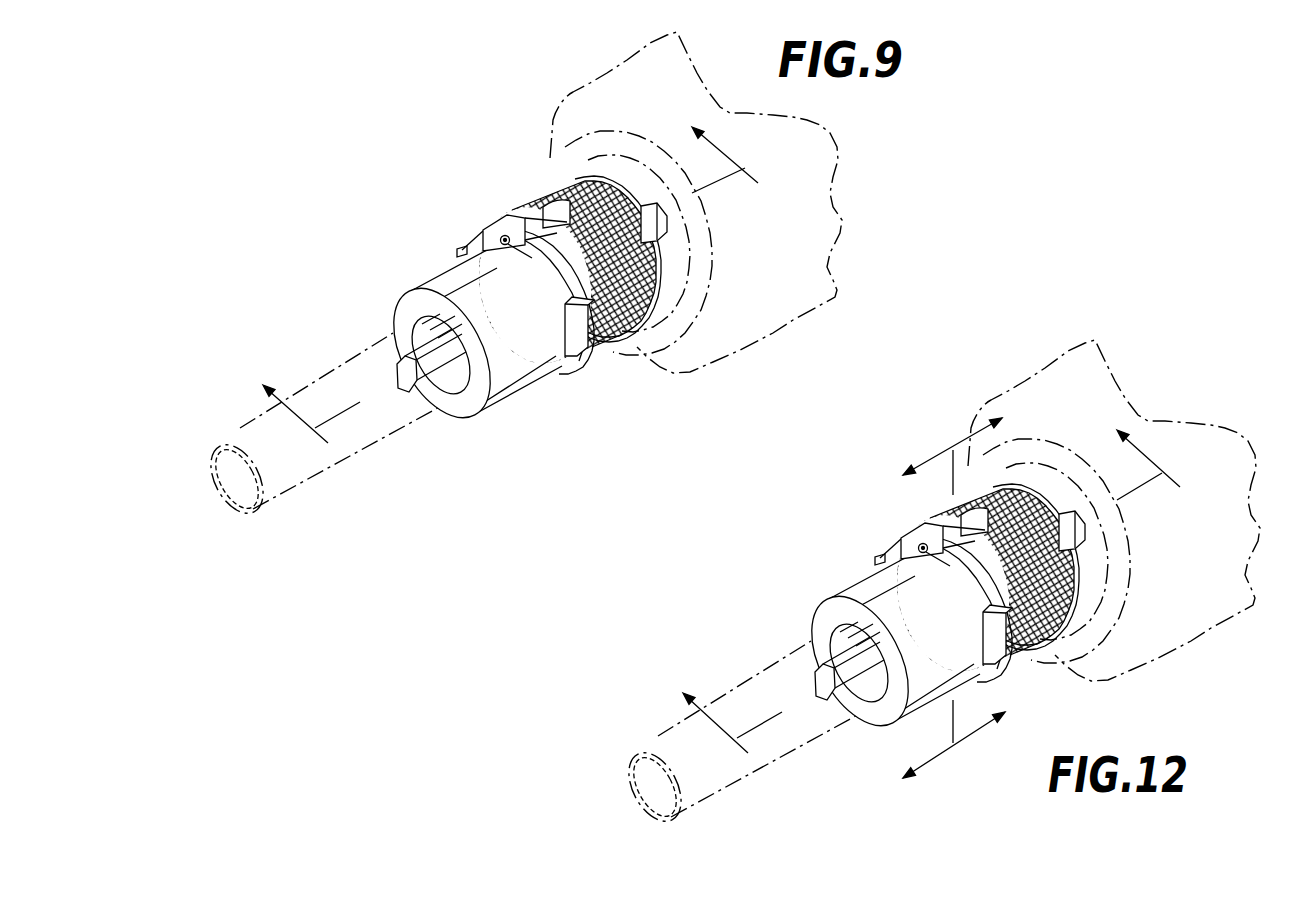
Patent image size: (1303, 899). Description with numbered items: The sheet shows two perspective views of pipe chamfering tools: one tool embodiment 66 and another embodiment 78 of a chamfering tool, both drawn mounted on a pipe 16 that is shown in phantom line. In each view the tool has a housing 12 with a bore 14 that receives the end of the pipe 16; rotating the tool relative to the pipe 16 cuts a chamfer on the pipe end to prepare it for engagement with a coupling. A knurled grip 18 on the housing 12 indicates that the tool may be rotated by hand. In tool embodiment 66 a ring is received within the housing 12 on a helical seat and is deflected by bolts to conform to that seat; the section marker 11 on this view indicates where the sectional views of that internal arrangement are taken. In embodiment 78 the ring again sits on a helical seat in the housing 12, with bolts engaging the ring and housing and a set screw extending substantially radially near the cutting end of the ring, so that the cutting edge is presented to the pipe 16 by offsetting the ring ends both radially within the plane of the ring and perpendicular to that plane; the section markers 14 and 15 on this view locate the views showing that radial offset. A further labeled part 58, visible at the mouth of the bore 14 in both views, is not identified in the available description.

In FIG. 9, the section line 11- 11 is at (500, 267).
In FIG. 9, the housing 12 is at (507, 360).
In FIG. 12, the housing 12 is at (912, 619).
In FIG. 9, the bore 14 is at (455, 385).
In FIG. 12, the bore 14 is at (911, 592).
In FIG. 12, the section line 15- 15 is at (885, 636).
In FIG. 9, the pipe 16 is at (288, 482).
In FIG. 12, the pipe 16 is at (899, 624).
In FIG. 9, the knurled grip 18 is at (627, 340).
In FIG. 12, the knurled grip 18 is at (1000, 608).
In FIG. 9, the hex pin / fastener 58 is at (397, 374).
In FIG. 12, the hex pin / fastener 58 is at (812, 631).
In FIG. 9, the tool embodiment 66 is at (357, 118).
In FIG. 12, the chamfering tool embodiment 78 is at (794, 472).